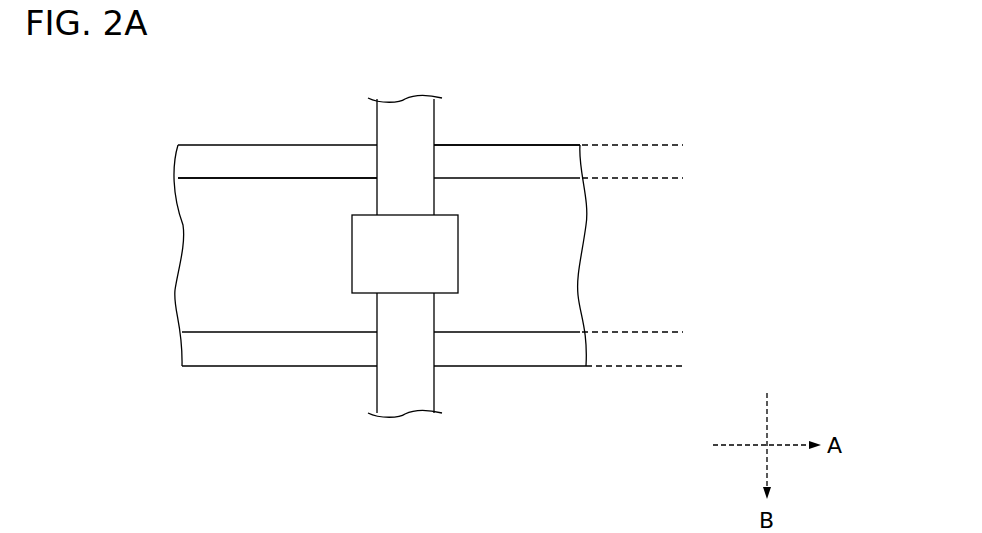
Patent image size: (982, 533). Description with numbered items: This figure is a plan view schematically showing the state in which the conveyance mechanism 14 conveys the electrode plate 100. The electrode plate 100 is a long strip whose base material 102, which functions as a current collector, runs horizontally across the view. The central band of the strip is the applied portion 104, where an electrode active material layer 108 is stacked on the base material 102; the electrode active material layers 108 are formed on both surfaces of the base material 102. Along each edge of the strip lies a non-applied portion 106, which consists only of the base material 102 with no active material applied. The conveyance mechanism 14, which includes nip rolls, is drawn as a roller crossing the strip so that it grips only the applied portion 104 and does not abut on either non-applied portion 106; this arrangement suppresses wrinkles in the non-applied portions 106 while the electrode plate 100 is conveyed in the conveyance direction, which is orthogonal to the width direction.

The electrode plate 100 is at (583, 134).
The base material 102 is at (505, 143).
The applied portion 104 is at (683, 181).
The non-applied portion 106 is at (683, 145).
The electrode active material layer 108 is at (202, 252).
The conveyance mechanism 14 is at (448, 295).